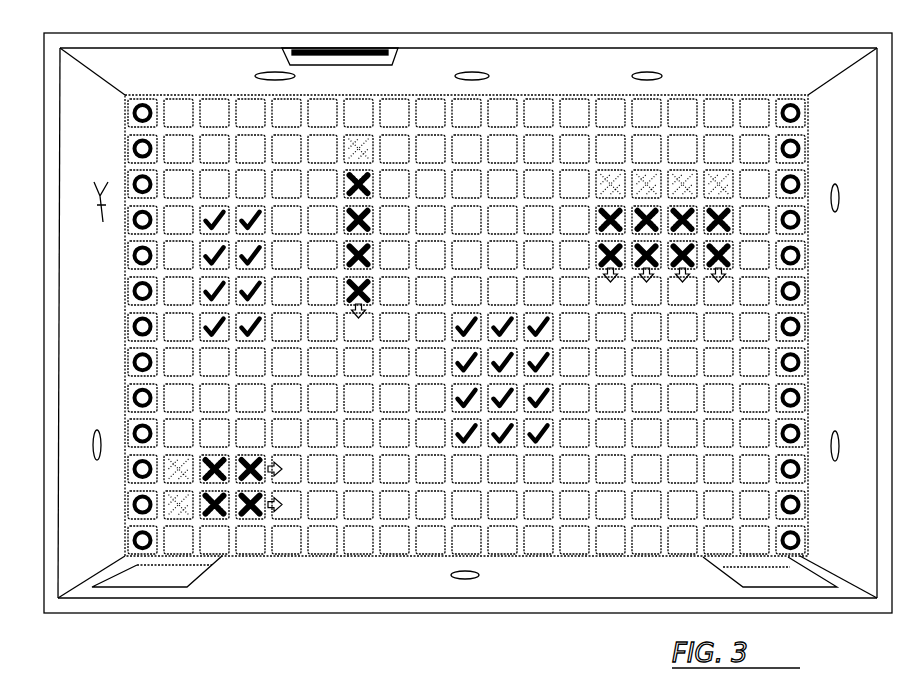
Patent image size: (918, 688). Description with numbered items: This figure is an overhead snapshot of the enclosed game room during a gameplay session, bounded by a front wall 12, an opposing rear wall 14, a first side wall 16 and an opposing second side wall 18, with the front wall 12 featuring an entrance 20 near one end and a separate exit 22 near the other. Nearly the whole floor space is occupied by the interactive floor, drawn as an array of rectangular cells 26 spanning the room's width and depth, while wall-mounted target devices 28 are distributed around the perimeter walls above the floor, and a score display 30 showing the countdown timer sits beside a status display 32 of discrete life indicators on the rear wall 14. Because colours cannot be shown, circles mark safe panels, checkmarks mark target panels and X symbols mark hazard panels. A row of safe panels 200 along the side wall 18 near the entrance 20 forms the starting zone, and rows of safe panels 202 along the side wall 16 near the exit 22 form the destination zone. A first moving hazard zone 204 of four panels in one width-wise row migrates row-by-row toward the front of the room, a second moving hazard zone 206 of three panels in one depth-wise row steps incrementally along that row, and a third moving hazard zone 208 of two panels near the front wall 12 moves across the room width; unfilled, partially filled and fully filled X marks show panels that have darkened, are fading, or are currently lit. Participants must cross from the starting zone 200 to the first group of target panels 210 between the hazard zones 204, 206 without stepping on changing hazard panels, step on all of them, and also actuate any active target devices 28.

The front wall 12 is at (311, 599).
The rear wall 14 is at (585, 52).
The first side wall 16 is at (60, 323).
The second side wall 18 is at (882, 322).
The entrance 20 is at (788, 582).
The exit 22 is at (150, 580).
The rectangular cells 26 is at (713, 472).
The target devices 28 is at (257, 76).
The score display 30 is at (372, 62).
The status display 32 is at (390, 56).
The safe panels of starting zone 200 is at (796, 101).
The safe panels of destination zone 202 is at (163, 84).
The first moving hazard zone 204 is at (618, 238).
The second moving hazard zone 206 is at (352, 218).
The third moving hazard zone 208 is at (250, 527).
The first group of target panels 210 is at (455, 446).